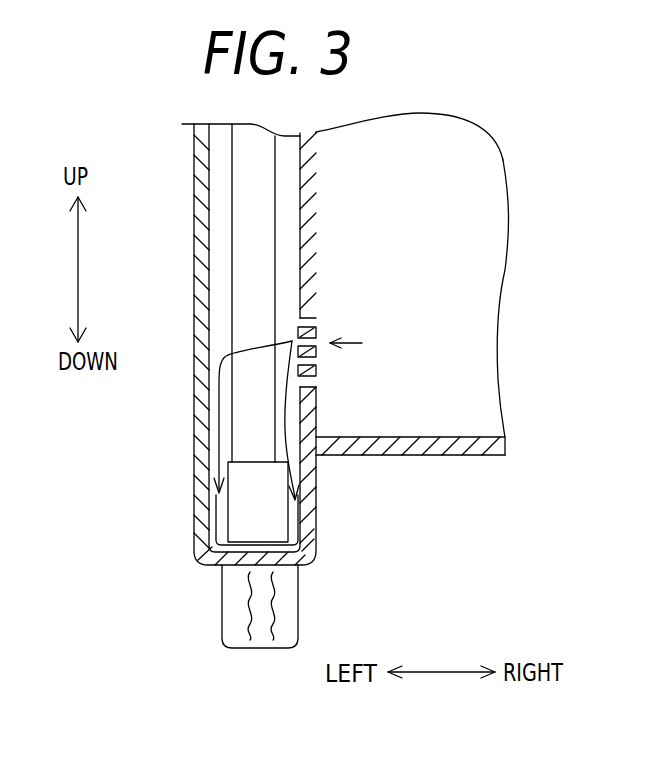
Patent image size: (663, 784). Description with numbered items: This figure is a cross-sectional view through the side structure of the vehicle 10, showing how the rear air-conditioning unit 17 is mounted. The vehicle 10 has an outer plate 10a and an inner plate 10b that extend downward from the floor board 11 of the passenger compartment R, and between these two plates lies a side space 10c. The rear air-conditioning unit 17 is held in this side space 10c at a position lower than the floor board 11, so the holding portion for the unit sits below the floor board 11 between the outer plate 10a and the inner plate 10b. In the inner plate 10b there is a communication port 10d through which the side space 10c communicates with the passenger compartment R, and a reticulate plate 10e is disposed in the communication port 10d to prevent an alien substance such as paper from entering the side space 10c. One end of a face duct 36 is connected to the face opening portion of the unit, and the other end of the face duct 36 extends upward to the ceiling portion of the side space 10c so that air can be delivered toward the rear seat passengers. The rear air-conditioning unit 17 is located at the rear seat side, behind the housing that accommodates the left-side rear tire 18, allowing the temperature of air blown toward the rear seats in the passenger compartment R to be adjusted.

The vehicle 10 is at (187, 320).
The outer plate 10a is at (194, 172).
The inner plate 10b is at (316, 157).
The side space 10c is at (218, 220).
The communication port 10d is at (310, 320).
The reticulate plate 10e is at (318, 352).
The floor board 11 is at (440, 455).
The rear air-conditioning unit 17 is at (233, 509).
The left-side rear tire 18 is at (230, 617).
The face duct 36 is at (232, 263).
The passenger compartment R is at (469, 307).